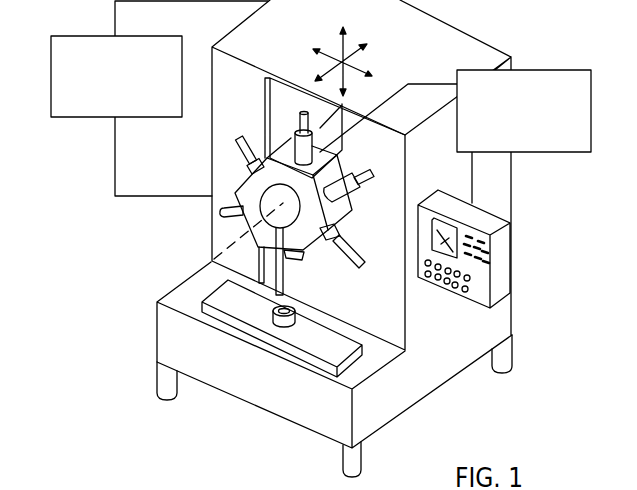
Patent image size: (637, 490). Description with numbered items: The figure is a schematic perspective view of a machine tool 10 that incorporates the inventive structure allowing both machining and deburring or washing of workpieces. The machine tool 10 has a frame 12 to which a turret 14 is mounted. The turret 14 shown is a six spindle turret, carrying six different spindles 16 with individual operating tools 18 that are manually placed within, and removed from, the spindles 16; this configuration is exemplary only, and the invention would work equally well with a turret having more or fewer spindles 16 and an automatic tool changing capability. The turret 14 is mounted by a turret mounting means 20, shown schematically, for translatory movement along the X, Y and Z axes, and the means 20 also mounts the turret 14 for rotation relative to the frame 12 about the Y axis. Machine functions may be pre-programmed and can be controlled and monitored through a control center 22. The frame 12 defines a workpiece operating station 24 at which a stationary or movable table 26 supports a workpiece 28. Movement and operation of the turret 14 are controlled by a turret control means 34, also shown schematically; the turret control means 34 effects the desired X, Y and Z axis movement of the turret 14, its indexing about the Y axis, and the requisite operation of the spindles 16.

The machine tool 10 is at (321, 238).
The frame 12 is at (467, 35).
The turret 14 is at (339, 163).
The spindles 16 is at (298, 143).
The operating tools 18 is at (299, 120).
The turret mounting means 20 is at (128, 111).
The control center 22 is at (492, 222).
The workpiece operating station 24 is at (317, 352).
The table 26 is at (358, 347).
The workpiece 28 is at (297, 320).
The turret control means 34 is at (515, 142).